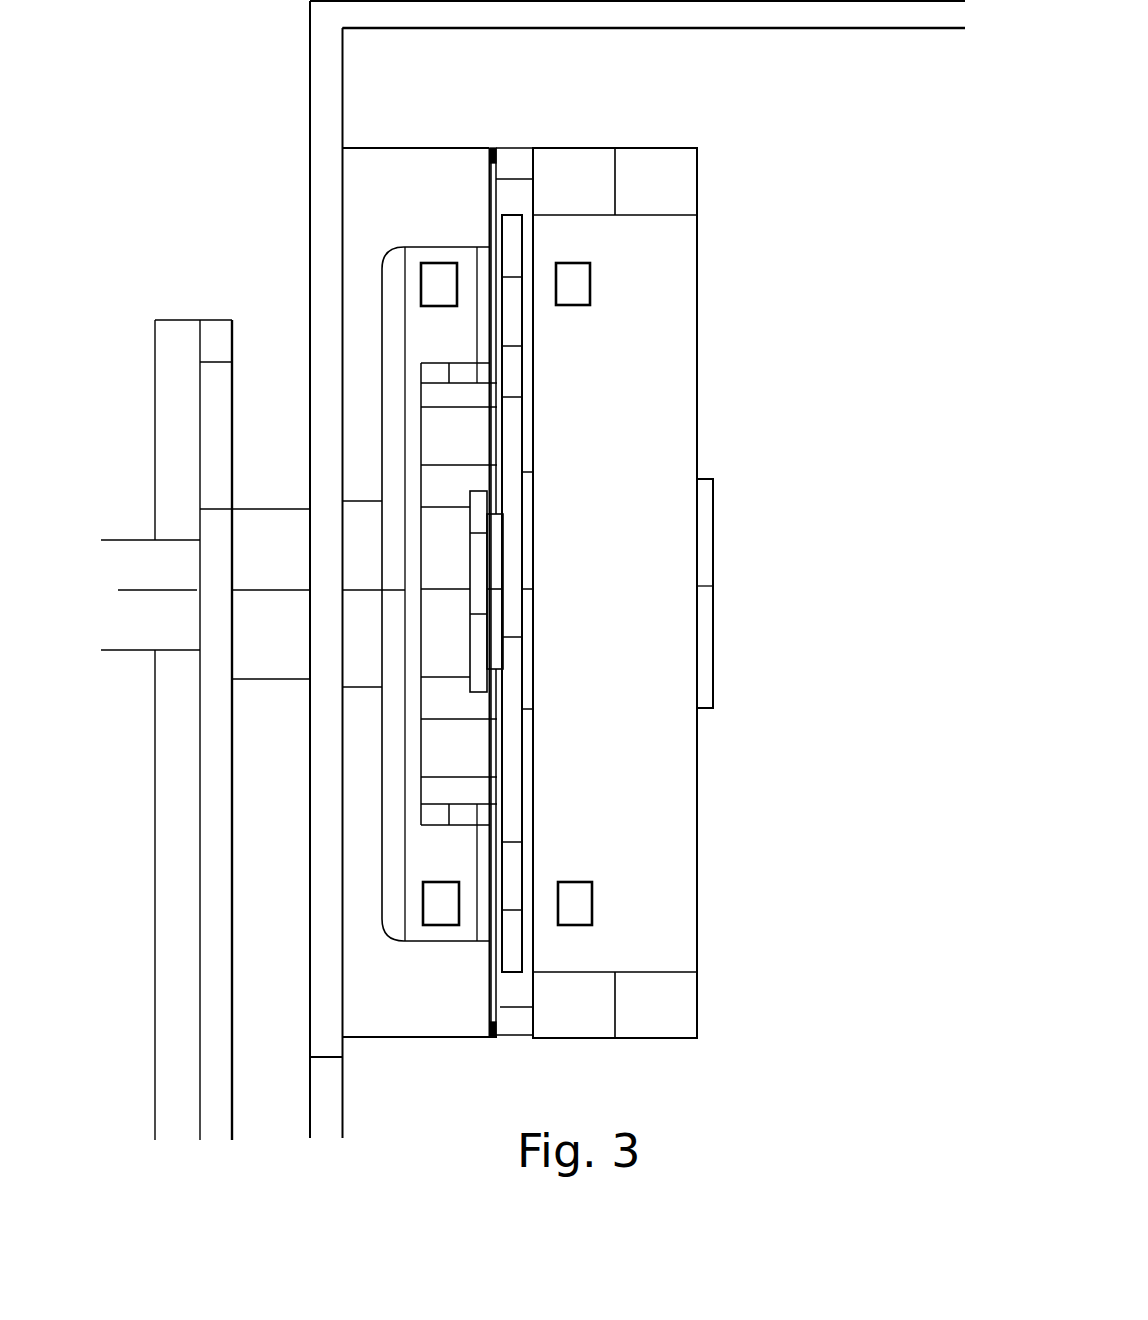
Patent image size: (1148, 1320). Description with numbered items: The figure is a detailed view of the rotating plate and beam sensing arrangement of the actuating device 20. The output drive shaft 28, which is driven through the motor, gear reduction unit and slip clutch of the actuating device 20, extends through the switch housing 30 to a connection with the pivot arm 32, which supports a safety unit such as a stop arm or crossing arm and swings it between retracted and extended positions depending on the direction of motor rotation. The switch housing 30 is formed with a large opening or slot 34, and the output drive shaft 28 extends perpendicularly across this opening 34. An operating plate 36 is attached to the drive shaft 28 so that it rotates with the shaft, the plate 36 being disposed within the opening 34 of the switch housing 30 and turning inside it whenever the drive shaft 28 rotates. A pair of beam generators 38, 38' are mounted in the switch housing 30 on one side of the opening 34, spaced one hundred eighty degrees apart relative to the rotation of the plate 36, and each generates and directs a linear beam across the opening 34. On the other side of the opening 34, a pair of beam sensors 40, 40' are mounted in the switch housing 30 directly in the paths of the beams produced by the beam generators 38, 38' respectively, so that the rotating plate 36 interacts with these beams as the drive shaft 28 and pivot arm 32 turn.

The actuating device 20 is at (697, 350).
The output drive shaft 28 is at (247, 505).
The switch housing 30 is at (685, 435).
The pivot arm 32 is at (170, 440).
The opening 34 is at (500, 155).
The operating plate 36 is at (508, 218).
The beam generator 38 is at (442, 234).
The beam generator 38' is at (423, 942).
The beam sensor 40 is at (615, 292).
The beam sensor 40' is at (618, 883).